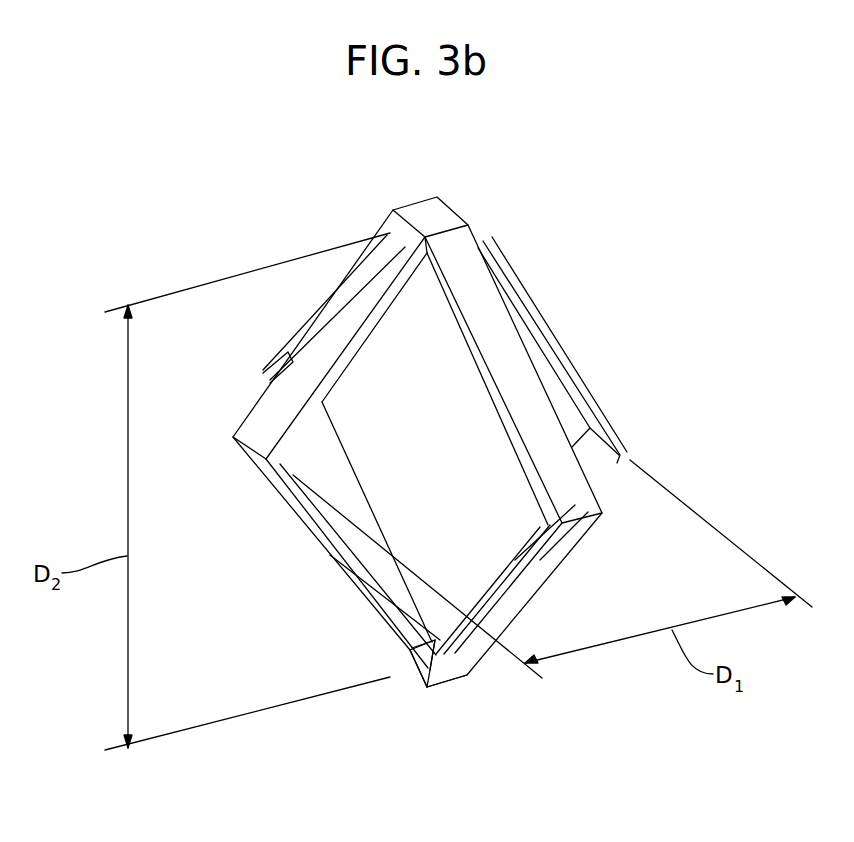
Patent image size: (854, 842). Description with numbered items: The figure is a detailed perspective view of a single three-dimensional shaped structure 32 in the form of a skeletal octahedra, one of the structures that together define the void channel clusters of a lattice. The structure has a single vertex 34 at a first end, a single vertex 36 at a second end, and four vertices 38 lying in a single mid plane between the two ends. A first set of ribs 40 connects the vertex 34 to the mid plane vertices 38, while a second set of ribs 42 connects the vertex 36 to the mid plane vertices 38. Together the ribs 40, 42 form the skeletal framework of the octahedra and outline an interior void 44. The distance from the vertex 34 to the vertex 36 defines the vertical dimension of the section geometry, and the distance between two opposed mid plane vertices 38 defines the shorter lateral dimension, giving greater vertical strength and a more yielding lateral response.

The 3D shaped structure 32 is at (568, 206).
The vertex 34 is at (442, 212).
The vertex 36 is at (426, 688).
The mid plane vertices 38 is at (263, 373).
The first set of ribs 40 is at (307, 313).
The second set of ribs 42 is at (387, 586).
The interior void 44 is at (453, 486).